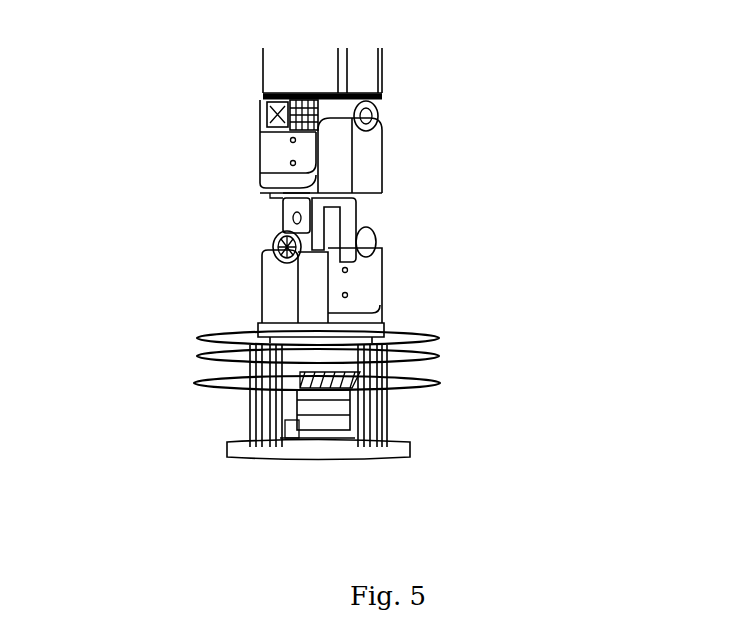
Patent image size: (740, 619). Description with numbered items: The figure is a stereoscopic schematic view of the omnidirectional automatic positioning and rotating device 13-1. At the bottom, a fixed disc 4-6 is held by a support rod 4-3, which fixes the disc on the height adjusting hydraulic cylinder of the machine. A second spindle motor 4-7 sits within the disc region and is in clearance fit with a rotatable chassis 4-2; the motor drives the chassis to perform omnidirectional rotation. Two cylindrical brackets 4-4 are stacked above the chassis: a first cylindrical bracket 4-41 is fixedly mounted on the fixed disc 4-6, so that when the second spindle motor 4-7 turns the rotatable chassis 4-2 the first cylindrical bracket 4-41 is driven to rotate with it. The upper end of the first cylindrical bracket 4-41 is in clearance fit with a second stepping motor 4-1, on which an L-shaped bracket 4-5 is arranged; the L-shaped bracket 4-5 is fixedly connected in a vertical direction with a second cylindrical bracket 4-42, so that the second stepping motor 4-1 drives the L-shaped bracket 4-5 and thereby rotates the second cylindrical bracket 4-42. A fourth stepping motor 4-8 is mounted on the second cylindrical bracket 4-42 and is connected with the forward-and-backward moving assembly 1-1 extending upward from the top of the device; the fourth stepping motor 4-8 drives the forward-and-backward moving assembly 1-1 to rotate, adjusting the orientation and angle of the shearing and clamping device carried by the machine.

The forward-and-backward moving assembly 1-1 is at (295, 78).
The fourth stepping motor 4-8 is at (280, 115).
The second cylindrical bracket 4-42 is at (335, 160).
The L-shaped bracket 4-5 is at (292, 193).
The second stepping motor 4-1 is at (286, 246).
The cylindrical brackets 4-4 is at (630, 100).
The first cylindrical bracket 4-41 is at (365, 277).
The rotatable chassis 4-2 is at (318, 335).
The fixed disc 4-6 is at (402, 383).
The support rod 4-3 is at (272, 436).
The second spindle motor 4-7 is at (322, 402).
The omnidirectional automatic positioning and rotating device 13-1 is at (313, 455).